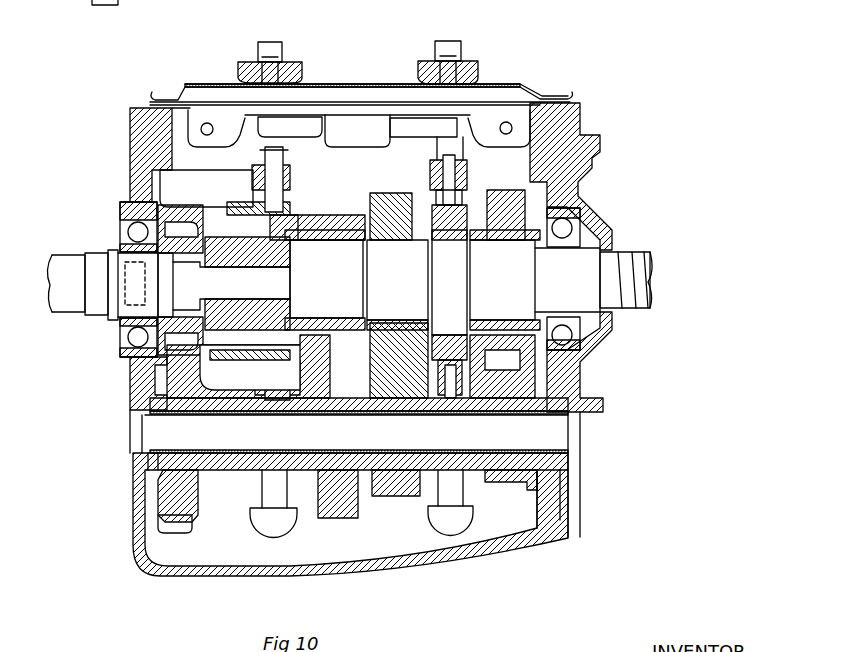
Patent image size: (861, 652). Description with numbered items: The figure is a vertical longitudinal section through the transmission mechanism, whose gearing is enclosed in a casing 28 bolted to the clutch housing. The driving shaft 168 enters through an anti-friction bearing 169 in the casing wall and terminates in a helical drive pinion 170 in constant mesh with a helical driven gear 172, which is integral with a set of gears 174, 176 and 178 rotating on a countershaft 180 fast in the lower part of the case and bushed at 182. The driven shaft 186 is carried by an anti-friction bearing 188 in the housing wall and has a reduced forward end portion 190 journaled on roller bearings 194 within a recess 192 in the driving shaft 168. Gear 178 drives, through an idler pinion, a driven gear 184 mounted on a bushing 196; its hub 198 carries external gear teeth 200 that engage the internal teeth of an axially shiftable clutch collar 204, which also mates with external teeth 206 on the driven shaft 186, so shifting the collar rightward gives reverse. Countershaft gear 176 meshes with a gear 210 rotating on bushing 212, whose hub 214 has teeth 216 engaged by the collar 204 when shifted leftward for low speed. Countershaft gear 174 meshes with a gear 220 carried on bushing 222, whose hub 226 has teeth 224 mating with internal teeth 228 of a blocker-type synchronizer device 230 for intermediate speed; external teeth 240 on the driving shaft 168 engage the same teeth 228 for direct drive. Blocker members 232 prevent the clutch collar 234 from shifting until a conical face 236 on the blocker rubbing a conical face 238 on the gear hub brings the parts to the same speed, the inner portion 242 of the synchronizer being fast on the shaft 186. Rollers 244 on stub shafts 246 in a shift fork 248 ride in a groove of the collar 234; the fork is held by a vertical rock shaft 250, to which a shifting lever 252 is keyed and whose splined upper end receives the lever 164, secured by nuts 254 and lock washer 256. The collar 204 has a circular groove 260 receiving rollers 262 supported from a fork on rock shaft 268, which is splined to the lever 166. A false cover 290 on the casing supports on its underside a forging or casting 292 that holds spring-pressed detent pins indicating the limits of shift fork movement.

The transmission casing 28 is at (130, 133).
The lever 164 is at (248, 62).
The nuts 254 is at (270, 42).
The lock washer 256 is at (290, 62).
The lever 166 is at (428, 62).
The false cover 290 is at (185, 95).
The stub shafts 246 is at (268, 172).
The rock shaft 250 is at (302, 74).
The forging or casting 292 is at (340, 113).
The rock shaft 268 is at (478, 72).
The shifting lever 252 is at (255, 180).
The internal teeth 228 is at (292, 222).
The gear 220 is at (380, 195).
The gear 210 is at (380, 190).
The driven gear 184 is at (505, 192).
The synchronizer device 230 is at (240, 190).
The external teeth 240 is at (182, 228).
The clutch collar 234 is at (258, 213).
The blocker members 232 is at (303, 228).
The teeth 224 is at (300, 235).
The rollers 262 is at (436, 196).
The clutch collar 204 is at (468, 212).
The helical drive pinion 170 is at (128, 208).
The anti-friction bearing 188 is at (582, 226).
The driving shaft 168 is at (65, 256).
The recess 192 is at (201, 262).
The conical face 236 is at (287, 238).
The hub 226 is at (296, 240).
The bushing 222 is at (340, 240).
The bushing 212 is at (397, 280).
The bushing 196 is at (505, 242).
The driven shaft 186 is at (630, 252).
The reduced forward end portion 190 is at (224, 285).
The roller bearings 194 is at (198, 310).
The conical face 238 is at (290, 308).
The inner portion 242 is at (275, 304).
The hub 214 is at (420, 325).
The external teeth 206 is at (448, 335).
The external gear teeth 200 is at (480, 320).
The hub 198 is at (490, 320).
The anti-friction bearing 169 is at (108, 340).
The shift fork 248 is at (277, 396).
The rollers 244 is at (320, 385).
The teeth 216 is at (402, 398).
The circular groove 260 is at (476, 398).
The countershaft 180 is at (130, 440).
The bushing 182 is at (245, 418).
The helical driven gear 172 is at (198, 510).
The countershaft gear 174 is at (345, 515).
The countershaft gear 176 is at (396, 500).
The countershaft gear 178 is at (510, 480).